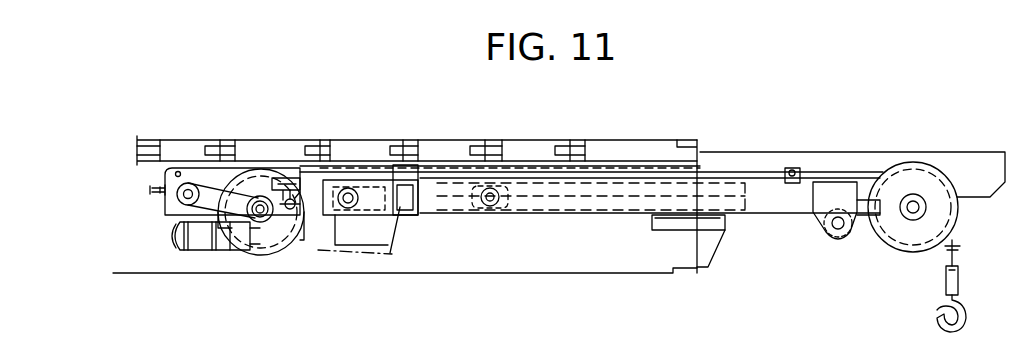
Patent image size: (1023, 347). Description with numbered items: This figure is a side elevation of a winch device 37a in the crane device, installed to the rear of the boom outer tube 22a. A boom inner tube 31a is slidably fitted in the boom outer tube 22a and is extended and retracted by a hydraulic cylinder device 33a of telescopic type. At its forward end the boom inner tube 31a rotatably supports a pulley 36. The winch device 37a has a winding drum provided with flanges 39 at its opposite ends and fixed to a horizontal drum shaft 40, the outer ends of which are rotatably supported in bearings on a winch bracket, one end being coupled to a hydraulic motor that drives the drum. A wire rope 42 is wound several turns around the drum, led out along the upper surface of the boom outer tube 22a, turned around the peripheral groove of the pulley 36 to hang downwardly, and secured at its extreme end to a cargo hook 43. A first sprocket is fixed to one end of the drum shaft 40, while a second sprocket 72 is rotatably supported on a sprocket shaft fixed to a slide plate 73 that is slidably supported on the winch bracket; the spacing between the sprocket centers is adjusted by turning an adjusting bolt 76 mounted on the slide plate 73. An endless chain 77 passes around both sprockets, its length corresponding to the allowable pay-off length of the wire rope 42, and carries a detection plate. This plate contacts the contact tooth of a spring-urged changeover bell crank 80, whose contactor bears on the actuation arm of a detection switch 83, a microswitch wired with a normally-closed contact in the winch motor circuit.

The boom outer tube 22a is at (556, 214).
The wire rope 42 is at (742, 168).
The boom inner tube 31a is at (866, 216).
The pulley 36 is at (912, 242).
The cargo hook 43 is at (965, 318).
The winch device 37a is at (203, 269).
The flanges 39 is at (262, 256).
The slide plate 73 is at (172, 200).
The adjusting bolt 76 is at (156, 188).
The second sprocket 72 is at (185, 206).
The endless chain 77 is at (232, 191).
The drum shaft 40 is at (258, 197).
The detection switch 83 is at (283, 178).
The changeover bell crank 80 is at (276, 254).
The hydraulic cylinder device 33a is at (435, 202).